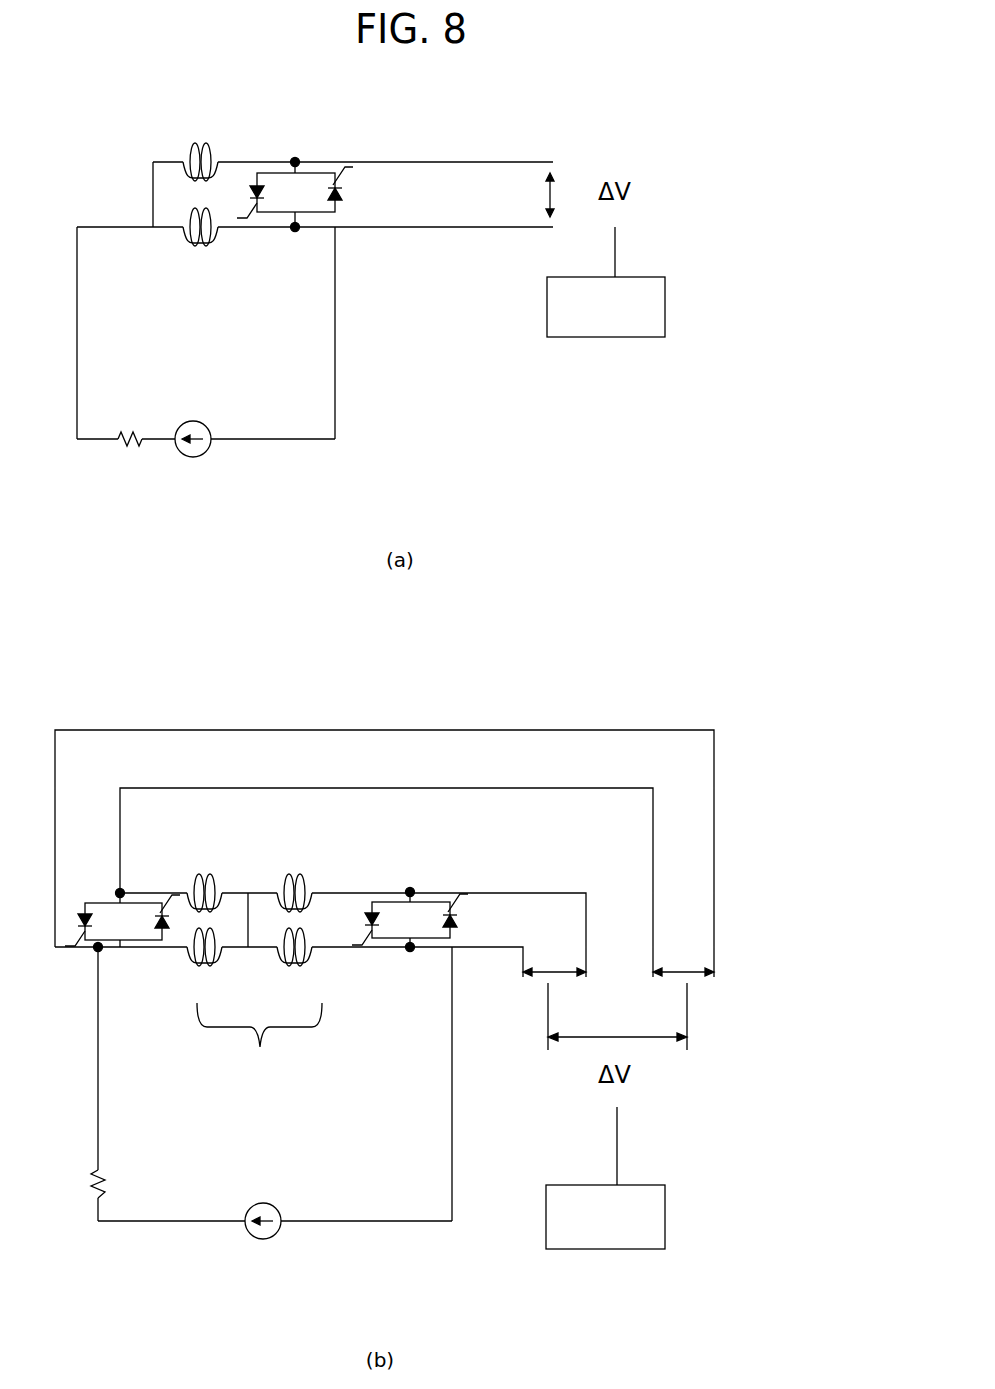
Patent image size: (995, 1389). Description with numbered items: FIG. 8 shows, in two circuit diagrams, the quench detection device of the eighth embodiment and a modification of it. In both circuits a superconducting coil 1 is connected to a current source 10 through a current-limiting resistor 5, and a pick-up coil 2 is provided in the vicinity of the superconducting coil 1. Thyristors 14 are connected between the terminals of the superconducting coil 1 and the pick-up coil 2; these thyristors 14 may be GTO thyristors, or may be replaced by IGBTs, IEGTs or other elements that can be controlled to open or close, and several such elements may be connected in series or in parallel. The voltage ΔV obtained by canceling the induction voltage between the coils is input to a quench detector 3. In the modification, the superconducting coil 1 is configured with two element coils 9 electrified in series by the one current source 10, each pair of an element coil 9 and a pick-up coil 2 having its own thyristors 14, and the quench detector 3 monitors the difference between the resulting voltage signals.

The superconducting coil 1 is at (196, 246).
The pick-up coil 2 is at (188, 157).
The quench detector 3 is at (665, 310).
The current-limiting resistor 5 is at (130, 450).
The element coils 9 is at (203, 966).
The current source 10 is at (200, 457).
The thyristors 14 is at (344, 195).